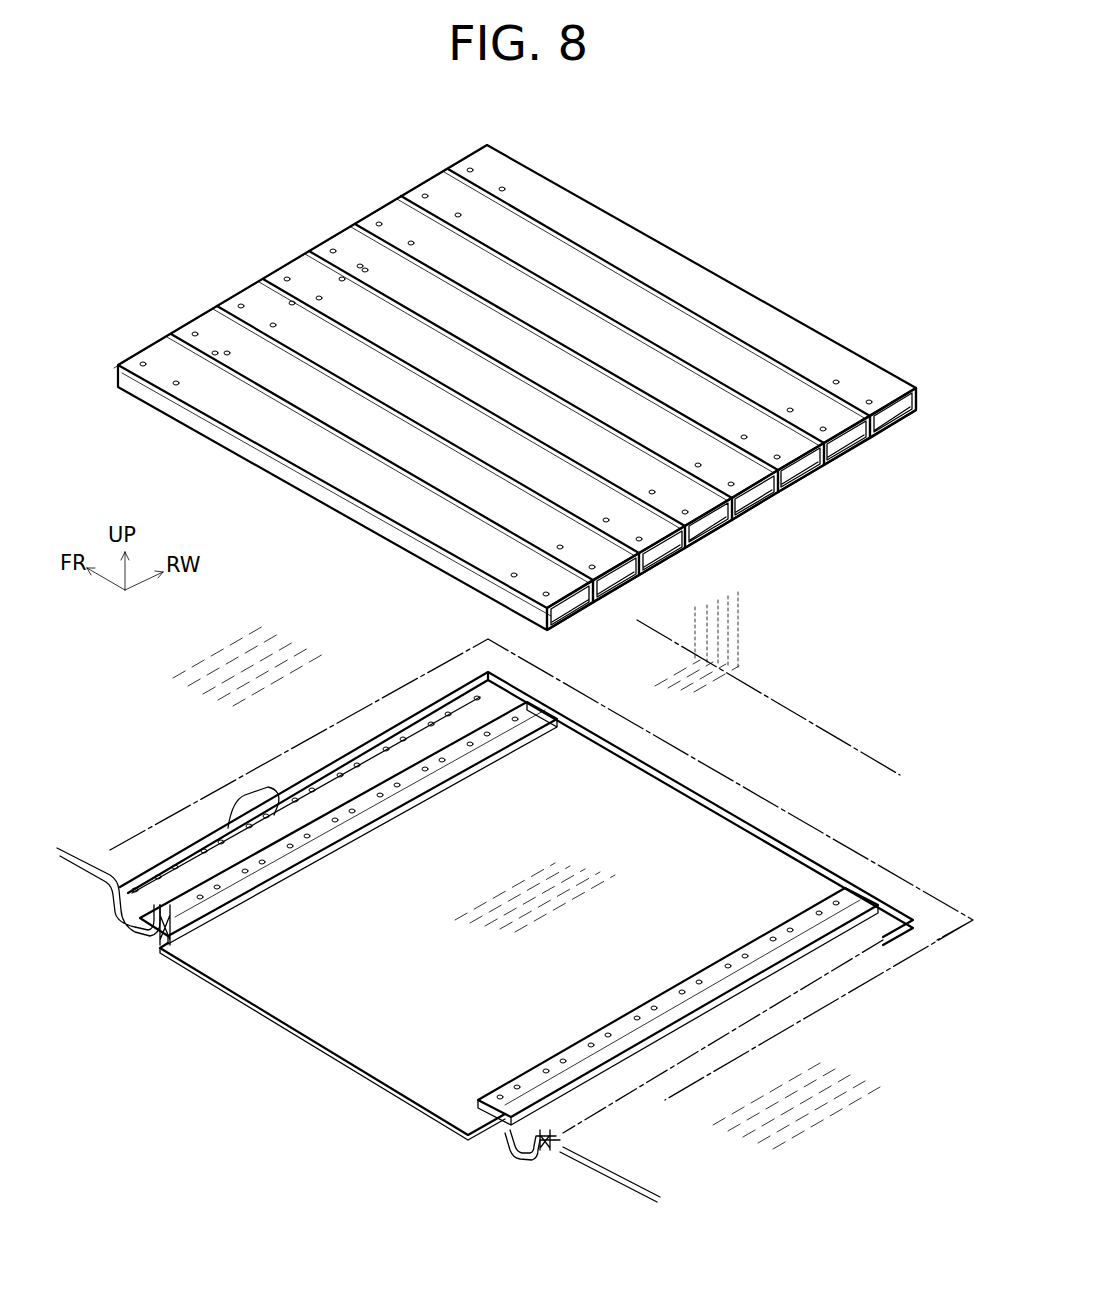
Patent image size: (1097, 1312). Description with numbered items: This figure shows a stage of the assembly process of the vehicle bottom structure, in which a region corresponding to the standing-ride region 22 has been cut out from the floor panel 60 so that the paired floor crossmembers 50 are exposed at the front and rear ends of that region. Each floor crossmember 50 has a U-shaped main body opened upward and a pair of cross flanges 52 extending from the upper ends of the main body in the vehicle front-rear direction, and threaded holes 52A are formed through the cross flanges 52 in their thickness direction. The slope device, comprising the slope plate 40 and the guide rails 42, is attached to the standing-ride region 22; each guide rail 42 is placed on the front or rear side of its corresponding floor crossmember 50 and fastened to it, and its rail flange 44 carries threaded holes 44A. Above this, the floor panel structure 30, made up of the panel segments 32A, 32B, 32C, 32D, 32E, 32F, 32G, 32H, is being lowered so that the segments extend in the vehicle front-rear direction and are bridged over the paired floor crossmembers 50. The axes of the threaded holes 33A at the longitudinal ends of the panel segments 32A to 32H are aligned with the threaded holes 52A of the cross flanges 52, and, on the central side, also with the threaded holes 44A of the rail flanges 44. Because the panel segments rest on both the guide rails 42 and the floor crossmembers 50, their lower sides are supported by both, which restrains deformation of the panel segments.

The standing-ride region 22 is at (760, 800).
The floor panel structure 30 is at (690, 258).
The panel segment 32A is at (580, 624).
The panel segment 32B is at (630, 600).
The panel segment 32C is at (662, 560).
The panel segment 32D is at (705, 538).
The panel segment 32E is at (768, 515).
The panel segment 32F is at (802, 492).
The panel segment 32G is at (846, 465).
The panel segment 32H is at (906, 440).
The threaded holes 33A is at (525, 178).
The slope plate 40 is at (345, 1010).
The guide rails 42 is at (487, 752).
The rail flanges 44 is at (780, 940).
The threaded holes 44A is at (433, 766).
The floor crossmember 50 is at (145, 945).
The cross flanges 52 is at (237, 838).
The threaded holes 52A is at (278, 805).
The floor panel 60 is at (152, 725).